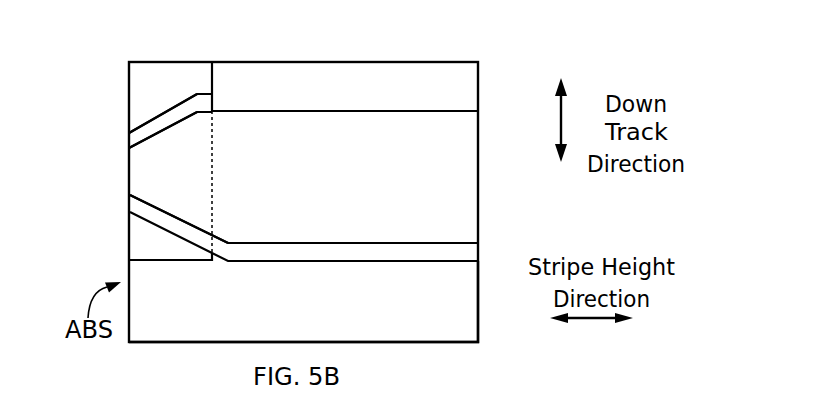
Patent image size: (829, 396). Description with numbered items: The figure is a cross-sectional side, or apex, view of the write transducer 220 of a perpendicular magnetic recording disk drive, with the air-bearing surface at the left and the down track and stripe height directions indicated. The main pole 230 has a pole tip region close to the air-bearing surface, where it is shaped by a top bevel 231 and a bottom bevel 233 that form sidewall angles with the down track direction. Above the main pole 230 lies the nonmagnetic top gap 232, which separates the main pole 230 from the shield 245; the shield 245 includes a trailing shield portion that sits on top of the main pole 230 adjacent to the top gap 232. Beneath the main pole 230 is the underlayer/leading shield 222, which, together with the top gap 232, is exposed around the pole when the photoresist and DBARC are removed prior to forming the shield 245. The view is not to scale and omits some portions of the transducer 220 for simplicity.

The write transducer 220 is at (117, 23).
The shield 245 is at (213, 82).
The top gap 232 is at (213, 103).
The top bevel 231 is at (139, 118).
The main pole 230 is at (304, 182).
The bottom bevel 233 is at (144, 226).
The underlayer/leading shield 222 is at (303, 297).